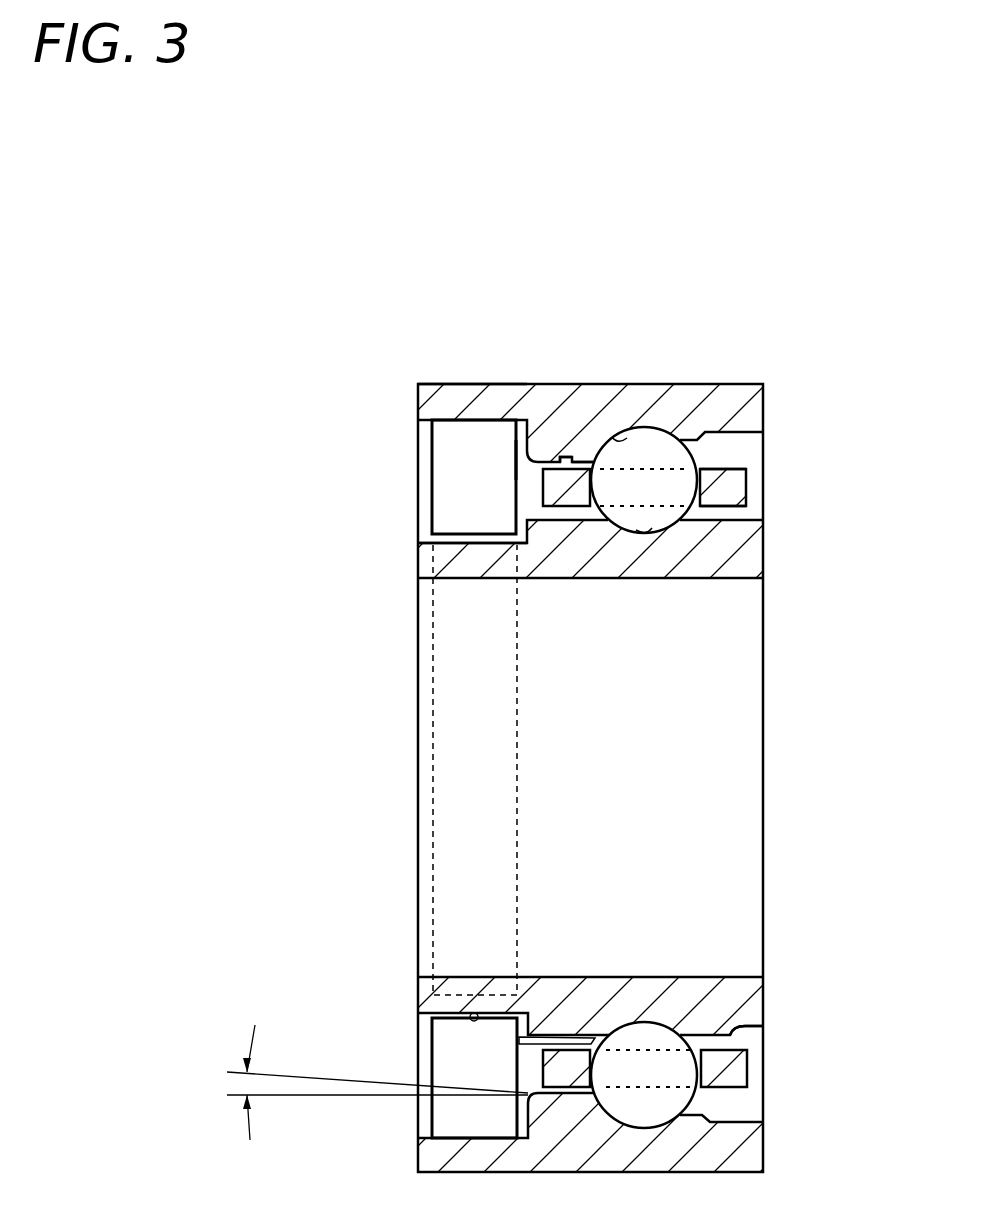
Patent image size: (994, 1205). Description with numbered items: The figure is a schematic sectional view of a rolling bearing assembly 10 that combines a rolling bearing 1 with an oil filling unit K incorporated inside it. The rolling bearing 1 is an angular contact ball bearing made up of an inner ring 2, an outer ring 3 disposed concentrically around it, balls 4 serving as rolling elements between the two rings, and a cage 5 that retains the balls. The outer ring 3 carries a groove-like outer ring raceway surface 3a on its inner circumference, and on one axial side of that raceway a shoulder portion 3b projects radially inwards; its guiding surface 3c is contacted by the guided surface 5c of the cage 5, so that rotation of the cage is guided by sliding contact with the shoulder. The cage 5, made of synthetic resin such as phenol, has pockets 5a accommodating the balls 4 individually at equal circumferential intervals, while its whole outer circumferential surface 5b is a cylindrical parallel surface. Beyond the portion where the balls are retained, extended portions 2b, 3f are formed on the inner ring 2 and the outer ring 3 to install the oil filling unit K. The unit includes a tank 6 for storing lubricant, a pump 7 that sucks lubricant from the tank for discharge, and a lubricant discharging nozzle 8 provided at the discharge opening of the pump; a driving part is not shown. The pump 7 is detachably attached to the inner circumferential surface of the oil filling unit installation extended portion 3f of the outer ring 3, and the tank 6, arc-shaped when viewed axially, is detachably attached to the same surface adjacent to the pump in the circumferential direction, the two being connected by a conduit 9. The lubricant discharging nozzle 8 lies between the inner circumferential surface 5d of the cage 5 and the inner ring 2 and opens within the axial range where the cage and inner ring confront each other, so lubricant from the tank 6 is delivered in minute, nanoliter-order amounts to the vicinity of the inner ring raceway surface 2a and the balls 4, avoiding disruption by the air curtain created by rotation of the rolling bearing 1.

The rolling bearing 1 is at (783, 390).
The inner ring 2 is at (740, 562).
The inner ring raceway surface 2a is at (648, 532).
The extended portion 2b is at (455, 562).
The outer ring 3 is at (720, 387).
The outer ring raceway surface 3a is at (612, 437).
The shoulder portion 3b is at (575, 455).
The guiding surface 3c is at (560, 458).
The oil filling unit installation extended portion 3f is at (475, 398).
The balls 4 is at (662, 452).
The cage 5 is at (733, 490).
The pockets 5a is at (650, 530).
The outer circumferential surface 5b is at (728, 470).
The guided surface 5c is at (525, 462).
The inner circumferential surface 5d is at (728, 1040).
The tank 6 is at (460, 745).
The pump 7 is at (455, 1108).
The lubricant discharging nozzle 8 is at (519, 1040).
The conduit 9 is at (469, 1018).
The rolling bearing assembly 10 is at (385, 407).
The oil filling unit K is at (420, 483).